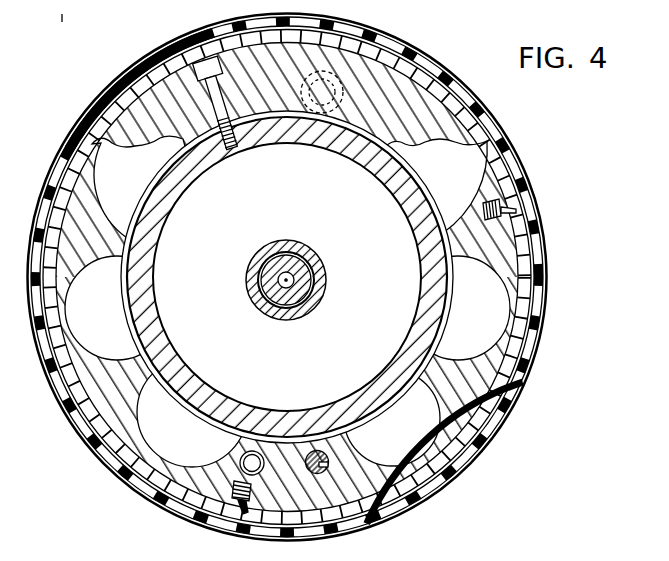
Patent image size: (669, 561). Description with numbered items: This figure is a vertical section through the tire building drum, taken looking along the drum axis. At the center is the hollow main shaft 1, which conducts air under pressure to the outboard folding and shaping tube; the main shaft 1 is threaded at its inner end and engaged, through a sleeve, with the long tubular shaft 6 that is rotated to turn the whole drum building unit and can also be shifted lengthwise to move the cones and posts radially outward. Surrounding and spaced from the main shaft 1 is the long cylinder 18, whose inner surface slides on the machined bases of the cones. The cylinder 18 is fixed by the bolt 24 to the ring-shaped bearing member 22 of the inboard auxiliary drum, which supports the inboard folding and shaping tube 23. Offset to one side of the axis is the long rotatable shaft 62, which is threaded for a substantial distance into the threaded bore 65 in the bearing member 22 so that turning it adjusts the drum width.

The main shaft 1 is at (301, 294).
The tubular shaft 6 is at (322, 276).
The cylinder 18 is at (400, 188).
The bearing member 22 is at (445, 110).
The inboard folding and shaping tube 23 is at (445, 71).
The bolt 24 is at (231, 145).
The rotatable shaft 62 is at (326, 455).
The threaded bore 65 is at (328, 465).